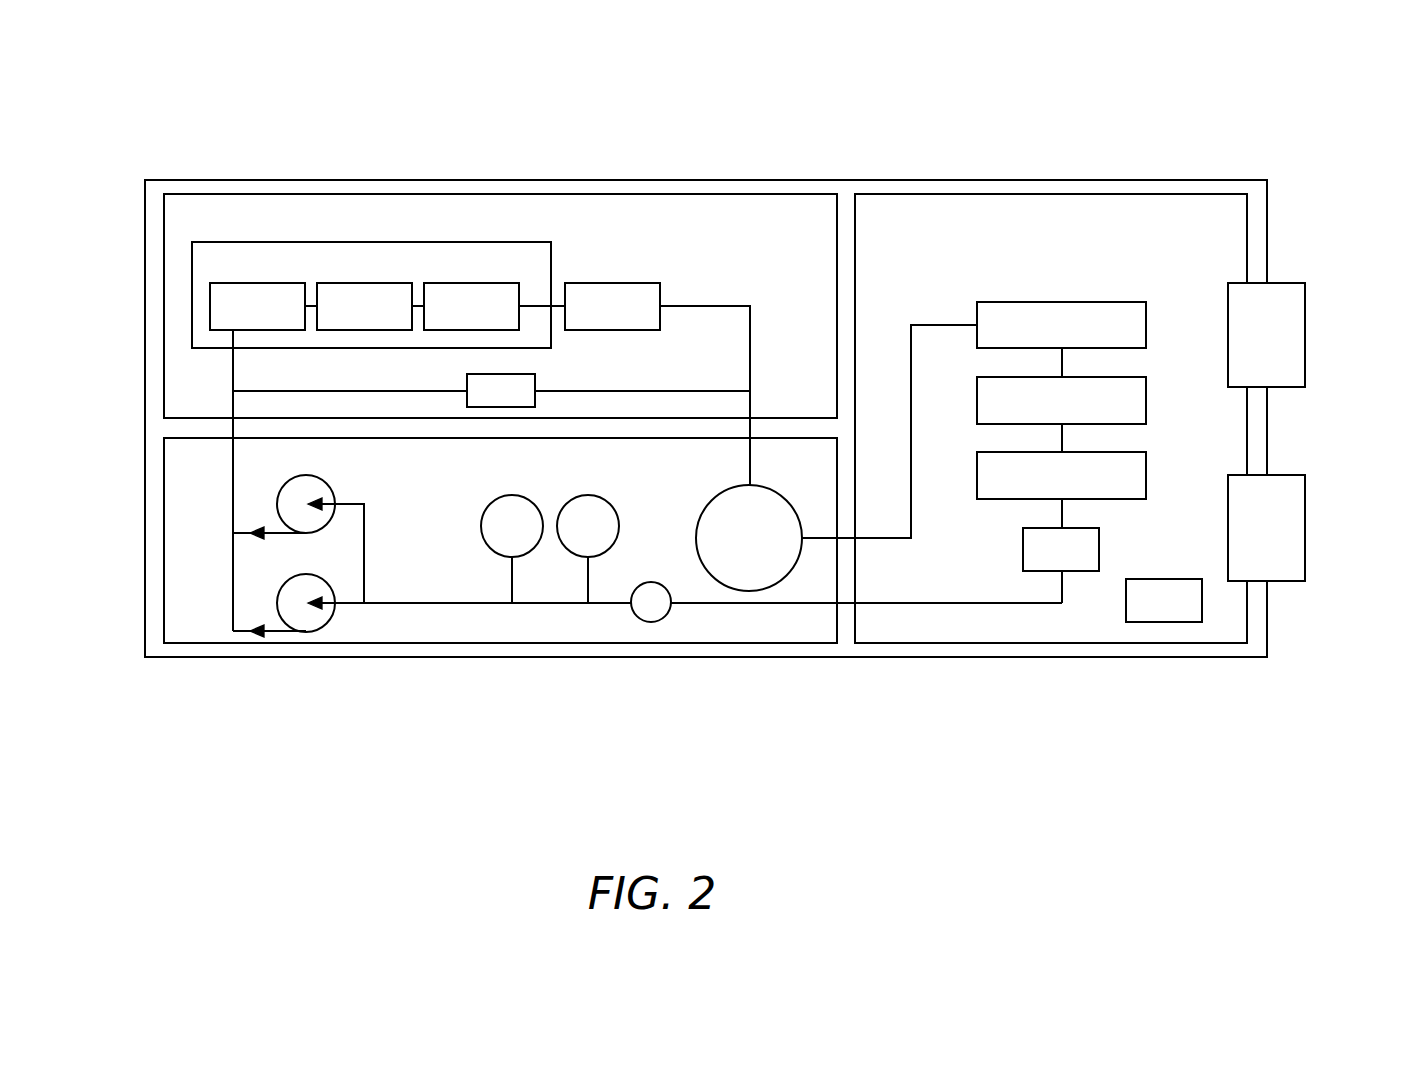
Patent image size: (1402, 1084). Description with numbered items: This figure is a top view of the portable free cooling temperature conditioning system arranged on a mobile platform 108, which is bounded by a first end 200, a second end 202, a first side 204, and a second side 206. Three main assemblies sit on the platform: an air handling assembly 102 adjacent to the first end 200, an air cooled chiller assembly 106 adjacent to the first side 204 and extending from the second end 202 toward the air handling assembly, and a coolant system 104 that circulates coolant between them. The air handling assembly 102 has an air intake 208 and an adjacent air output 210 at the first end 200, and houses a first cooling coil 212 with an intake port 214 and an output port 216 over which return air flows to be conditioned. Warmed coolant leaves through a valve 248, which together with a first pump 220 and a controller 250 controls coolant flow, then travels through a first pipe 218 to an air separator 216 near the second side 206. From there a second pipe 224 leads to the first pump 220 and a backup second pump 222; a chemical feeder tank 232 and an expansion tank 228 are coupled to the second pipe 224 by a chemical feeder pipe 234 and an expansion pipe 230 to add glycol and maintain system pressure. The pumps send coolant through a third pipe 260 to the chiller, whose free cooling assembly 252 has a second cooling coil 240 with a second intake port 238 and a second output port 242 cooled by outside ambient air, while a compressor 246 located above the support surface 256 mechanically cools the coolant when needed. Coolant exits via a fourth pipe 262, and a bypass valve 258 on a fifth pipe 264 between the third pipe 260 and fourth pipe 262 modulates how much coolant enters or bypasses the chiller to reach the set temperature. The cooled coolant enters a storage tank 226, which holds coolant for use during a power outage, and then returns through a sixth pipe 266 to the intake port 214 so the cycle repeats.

The first end 200 is at (1300, 420).
The mobile platform 108 is at (138, 168).
The first side 204 is at (637, 143).
The second end 202 is at (110, 414).
The second side 206 is at (698, 718).
The support surface 256 is at (845, 192).
The air cooled chiller assembly 106 is at (500, 306).
The coolant system 104 is at (500, 540).
The air handling assembly 102 is at (1051, 418).
The free cooling assembly 252 is at (371, 295).
The second intake port 238 is at (257, 306).
The second cooling coil 240 is at (358, 306).
The second output port 242 is at (465, 306).
The compressor 246 is at (589, 306).
The fourth pipe 262 is at (725, 305).
The bypass valve 258 is at (501, 390).
The fifth pipe 264 is at (612, 390).
The third pipe 260 is at (233, 377).
The second pump 222 is at (325, 483).
The first pump 220 is at (305, 632).
The second pipe 224 is at (425, 603).
The chemical feeder tank 232 is at (512, 526).
The chemical feeder pipe 234 is at (512, 583).
The expansion tank 228 is at (588, 526).
The expansion pipe 230 is at (588, 583).
The output port 216 is at (648, 621).
The storage tank 226 is at (749, 538).
The sixth pipe 266 is at (947, 324).
The intake port 214 is at (1061, 325).
The first cooling coil 212 is at (1061, 386).
The valve 248 is at (1061, 535).
The first pipe 218 is at (922, 602).
The controller 250 is at (1164, 600).
The air intake 208 is at (1266, 335).
The air output 210 is at (1266, 528).